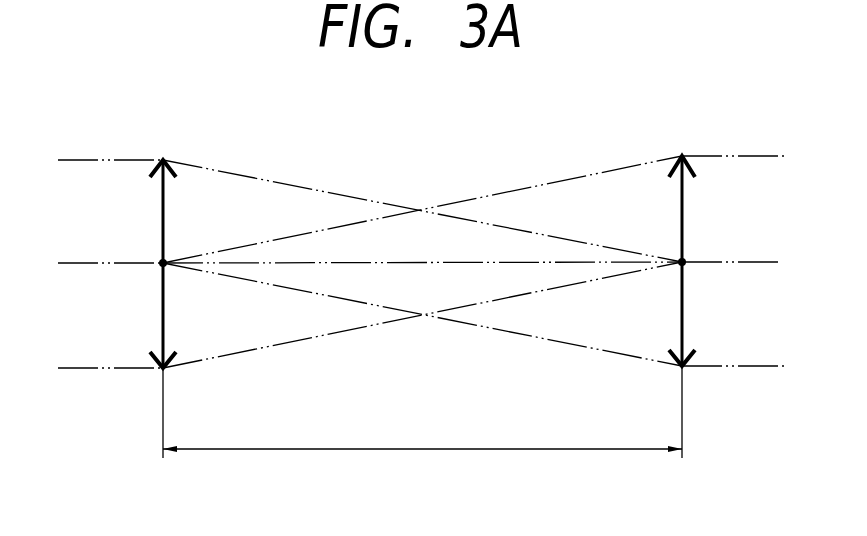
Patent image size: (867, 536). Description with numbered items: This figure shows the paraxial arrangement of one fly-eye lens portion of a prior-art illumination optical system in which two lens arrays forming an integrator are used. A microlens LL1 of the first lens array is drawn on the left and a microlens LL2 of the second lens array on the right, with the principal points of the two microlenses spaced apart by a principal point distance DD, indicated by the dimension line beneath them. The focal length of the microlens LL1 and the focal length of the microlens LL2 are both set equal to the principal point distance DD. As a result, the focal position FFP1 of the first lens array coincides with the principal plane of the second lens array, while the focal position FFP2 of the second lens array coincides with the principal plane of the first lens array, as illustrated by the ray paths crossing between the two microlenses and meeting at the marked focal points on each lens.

The microlens of the first lens array LL1 is at (164, 215).
The microlens of the second lens array LL2 is at (681, 202).
The focal position of the first lens array FFP1 is at (684, 263).
The focal position of the second lens array FFP2 is at (162, 264).
The principal point distance DD is at (422, 413).